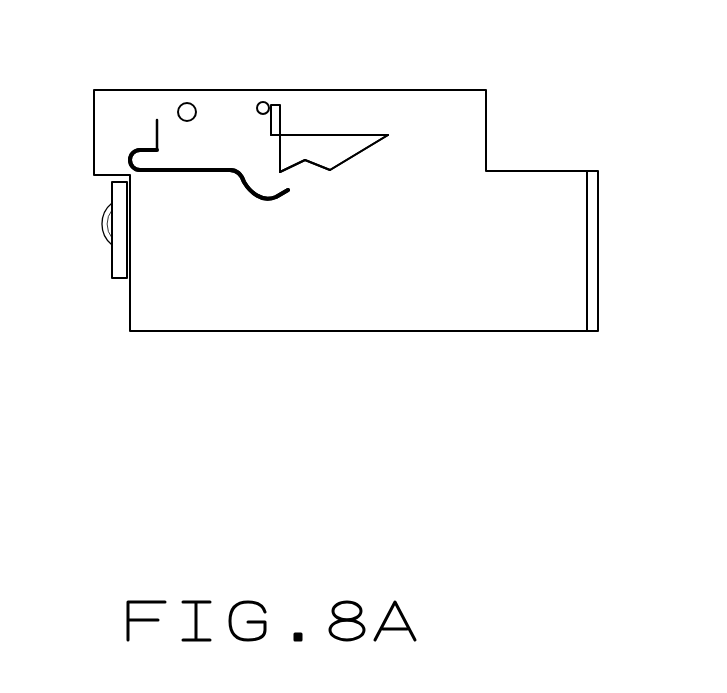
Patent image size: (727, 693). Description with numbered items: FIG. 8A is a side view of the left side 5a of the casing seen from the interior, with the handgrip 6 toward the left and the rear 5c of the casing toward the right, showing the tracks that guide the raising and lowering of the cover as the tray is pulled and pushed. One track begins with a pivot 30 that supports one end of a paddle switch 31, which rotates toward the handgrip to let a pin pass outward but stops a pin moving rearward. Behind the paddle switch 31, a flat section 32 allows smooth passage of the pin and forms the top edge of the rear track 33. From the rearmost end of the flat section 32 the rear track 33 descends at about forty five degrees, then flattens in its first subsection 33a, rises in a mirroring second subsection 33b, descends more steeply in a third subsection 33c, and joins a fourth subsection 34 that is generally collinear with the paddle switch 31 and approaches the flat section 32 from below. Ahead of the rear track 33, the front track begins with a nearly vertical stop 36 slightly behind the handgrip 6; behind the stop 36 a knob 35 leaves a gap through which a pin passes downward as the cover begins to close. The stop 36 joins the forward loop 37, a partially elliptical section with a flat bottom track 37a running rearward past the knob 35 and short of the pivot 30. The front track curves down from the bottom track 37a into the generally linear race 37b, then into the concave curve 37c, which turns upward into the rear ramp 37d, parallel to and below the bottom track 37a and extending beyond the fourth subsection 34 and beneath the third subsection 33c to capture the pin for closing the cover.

The left side panel 5a is at (468, 132).
The rear of the casing 5c is at (593, 280).
The handgrip 6 is at (120, 263).
The pivot 30 is at (265, 103).
The paddle switch 31 is at (282, 118).
The flat section 32 is at (333, 135).
The rear track 33 is at (373, 147).
The first subsection 33a is at (340, 166).
The second subsection 33b is at (328, 168).
The third subsection 33c is at (298, 163).
The fourth subsection 34 is at (280, 152).
The knob 35 is at (181, 104).
The stop 36 is at (153, 138).
The forward loop 37 is at (133, 160).
The bottom track 37a is at (129, 305).
The race 37b is at (172, 171).
The curve 37c is at (232, 172).
The rear ramp 37d is at (284, 196).